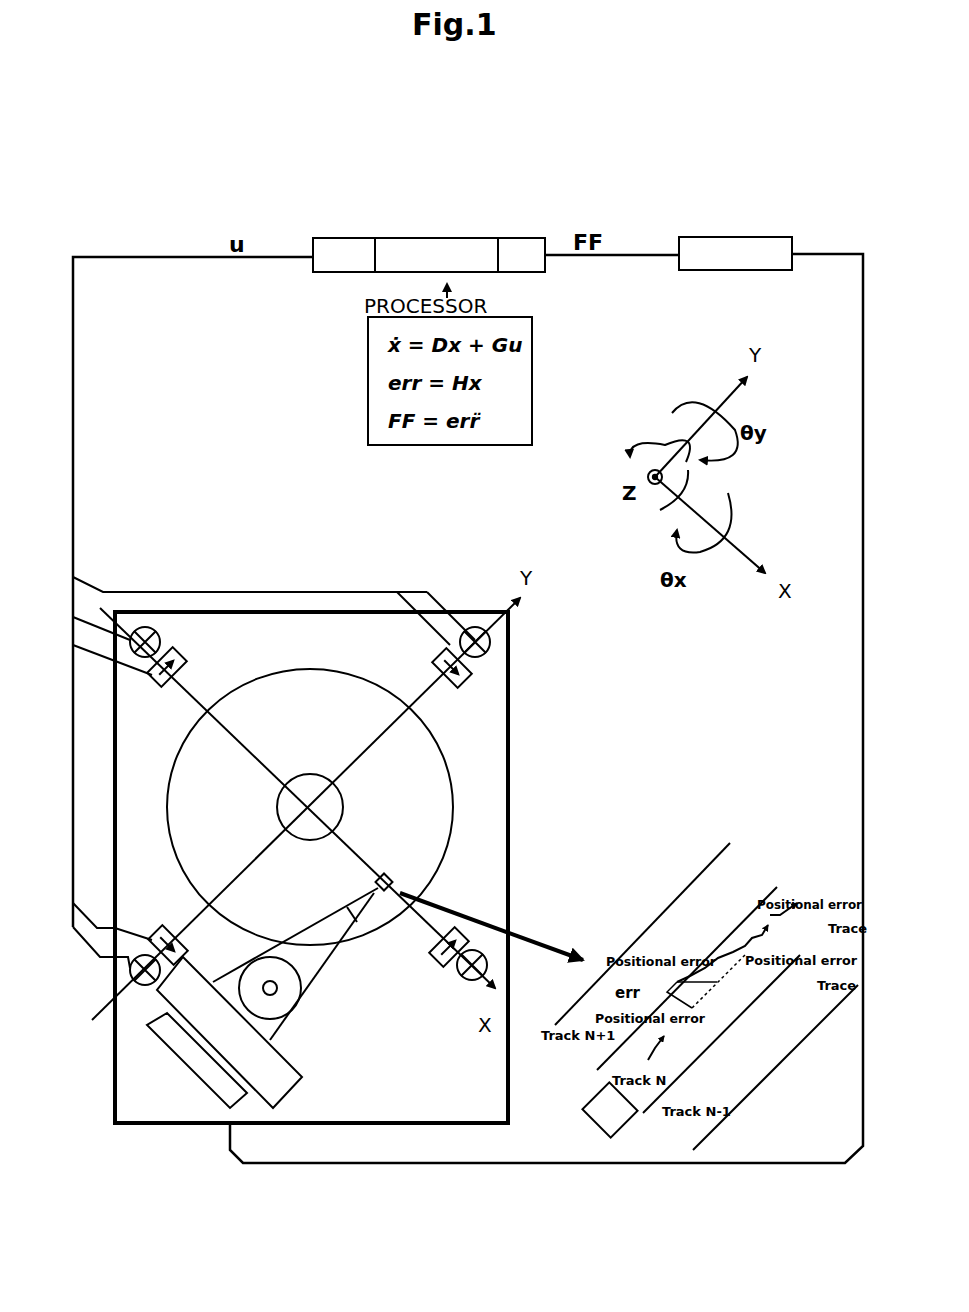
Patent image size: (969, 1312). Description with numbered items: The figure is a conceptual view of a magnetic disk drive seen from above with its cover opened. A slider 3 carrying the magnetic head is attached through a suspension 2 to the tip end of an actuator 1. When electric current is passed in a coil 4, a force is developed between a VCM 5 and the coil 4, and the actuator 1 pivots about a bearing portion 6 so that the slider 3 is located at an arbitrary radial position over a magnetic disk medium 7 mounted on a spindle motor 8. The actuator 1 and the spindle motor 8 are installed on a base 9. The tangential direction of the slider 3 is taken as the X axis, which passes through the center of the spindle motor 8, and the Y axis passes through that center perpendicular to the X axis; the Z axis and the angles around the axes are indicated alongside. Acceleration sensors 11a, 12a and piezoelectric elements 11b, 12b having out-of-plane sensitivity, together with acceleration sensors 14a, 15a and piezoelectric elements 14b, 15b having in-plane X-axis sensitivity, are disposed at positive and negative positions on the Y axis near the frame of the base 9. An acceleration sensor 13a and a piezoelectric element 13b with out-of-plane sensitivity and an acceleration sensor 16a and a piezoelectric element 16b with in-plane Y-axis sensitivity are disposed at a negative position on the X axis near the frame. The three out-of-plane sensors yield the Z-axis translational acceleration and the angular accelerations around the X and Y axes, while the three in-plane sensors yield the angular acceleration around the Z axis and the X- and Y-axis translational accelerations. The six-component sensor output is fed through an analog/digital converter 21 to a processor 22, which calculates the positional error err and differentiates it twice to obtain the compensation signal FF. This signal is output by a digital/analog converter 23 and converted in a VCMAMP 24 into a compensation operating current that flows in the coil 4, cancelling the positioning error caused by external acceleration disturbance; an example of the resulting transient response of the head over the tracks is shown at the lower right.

The actuator 1 is at (410, 1018).
The suspension 2 is at (372, 903).
The slider 3 is at (392, 882).
The coil 4 is at (222, 1100).
The VCM 5 is at (290, 1093).
The bearing portion 6 is at (288, 1002).
The magnetic disk medium 7 is at (420, 828).
The spindle motor 8 is at (320, 805).
The base 9 is at (322, 622).
The acceleration sensor 11a is at (536, 630).
The piezoelectric element 11b is at (490, 632).
The acceleration sensor 12a is at (88, 974).
The piezoelectric element 12b is at (130, 968).
The acceleration sensor 13a is at (164, 597).
The piezoelectric element 13b is at (145, 628).
The acceleration sensor 14a is at (511, 681).
The piezoelectric element 14b is at (470, 682).
The acceleration sensor 15a is at (136, 921).
The piezoelectric element 15b is at (150, 932).
The acceleration sensor 16a is at (201, 625).
The piezoelectric element 16b is at (177, 655).
The analog/digital converter 21 is at (332, 236).
The processor 22 is at (414, 236).
The digital/analog converter 23 is at (522, 236).
The VCMAMP 24 is at (722, 234).